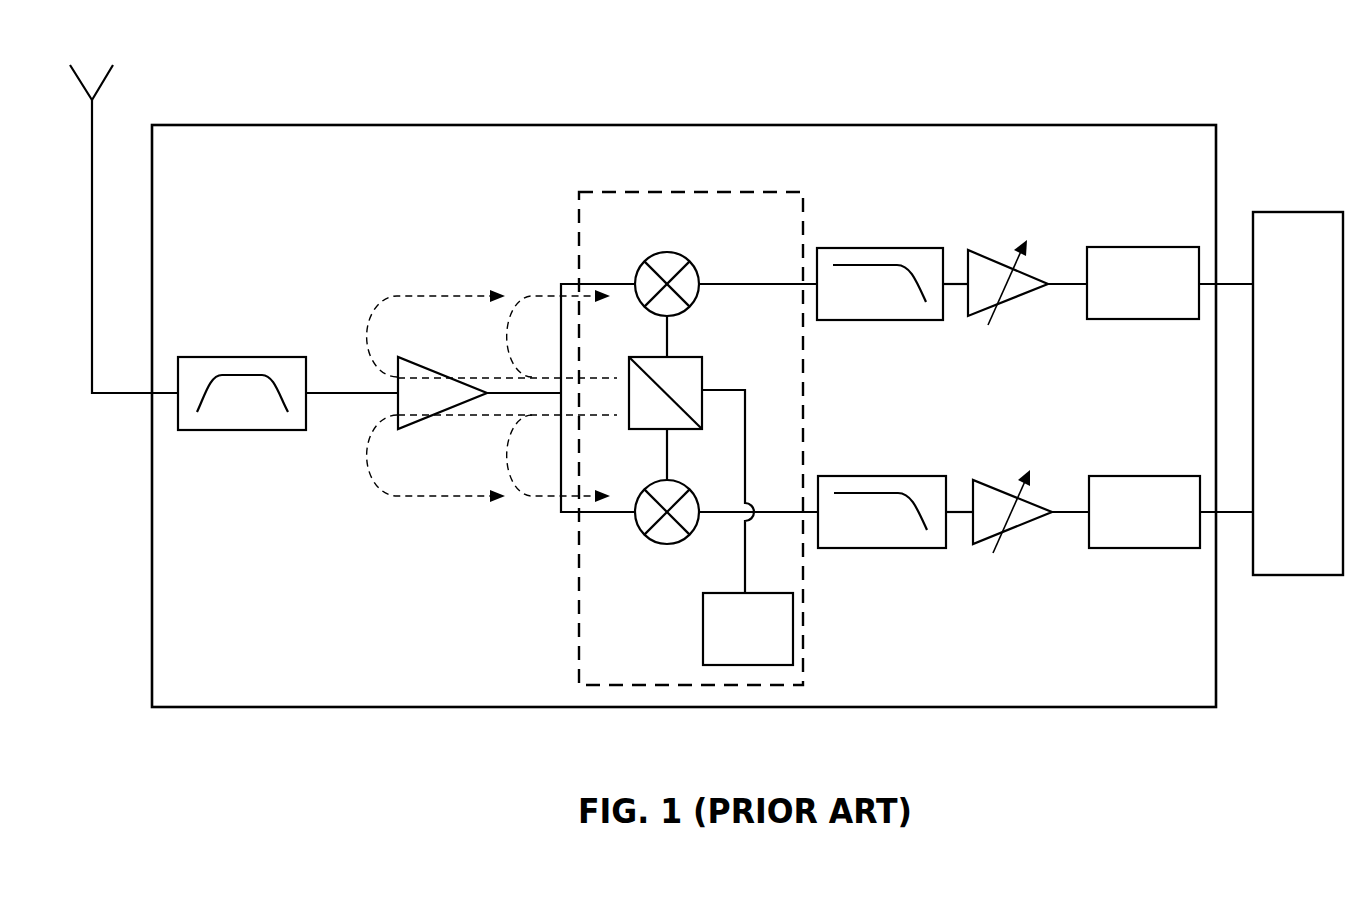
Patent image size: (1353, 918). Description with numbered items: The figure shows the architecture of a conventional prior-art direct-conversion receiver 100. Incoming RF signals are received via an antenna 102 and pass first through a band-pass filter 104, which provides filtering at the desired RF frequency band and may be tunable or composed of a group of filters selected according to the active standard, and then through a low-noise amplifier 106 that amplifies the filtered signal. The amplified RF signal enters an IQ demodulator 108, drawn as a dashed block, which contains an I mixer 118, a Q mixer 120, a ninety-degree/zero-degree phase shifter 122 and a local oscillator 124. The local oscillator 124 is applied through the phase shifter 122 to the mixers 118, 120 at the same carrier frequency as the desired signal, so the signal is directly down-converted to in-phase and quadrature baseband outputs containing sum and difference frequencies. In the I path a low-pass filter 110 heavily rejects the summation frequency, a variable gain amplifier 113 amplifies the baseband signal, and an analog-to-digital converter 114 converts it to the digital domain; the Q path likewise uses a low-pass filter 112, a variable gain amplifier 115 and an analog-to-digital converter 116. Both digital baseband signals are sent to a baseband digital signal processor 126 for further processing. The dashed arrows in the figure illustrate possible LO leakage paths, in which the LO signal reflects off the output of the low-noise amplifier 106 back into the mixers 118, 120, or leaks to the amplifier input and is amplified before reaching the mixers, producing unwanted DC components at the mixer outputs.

The direct-conversion receiver 100 is at (664, 414).
The antenna 102 is at (93, 115).
The band-pass filter 104 is at (233, 357).
The low-noise amplifier 106 is at (398, 357).
The IQ demodulator 108 is at (579, 242).
The low-pass filter 110 is at (871, 248).
The low-pass filter 112 is at (871, 548).
The variable gain amplifier 113 is at (990, 253).
The analog-to-digital converter 114 is at (1100, 247).
The variable gain amplifier 115 is at (995, 483).
The analog-to-digital converter 116 is at (1099, 548).
The mixer 118 is at (666, 251).
The mixer 120 is at (667, 545).
The 90°/0° phase shifter 122 is at (702, 357).
The local oscillator 124 is at (748, 629).
The baseband digital signal processor 126 is at (1298, 393).